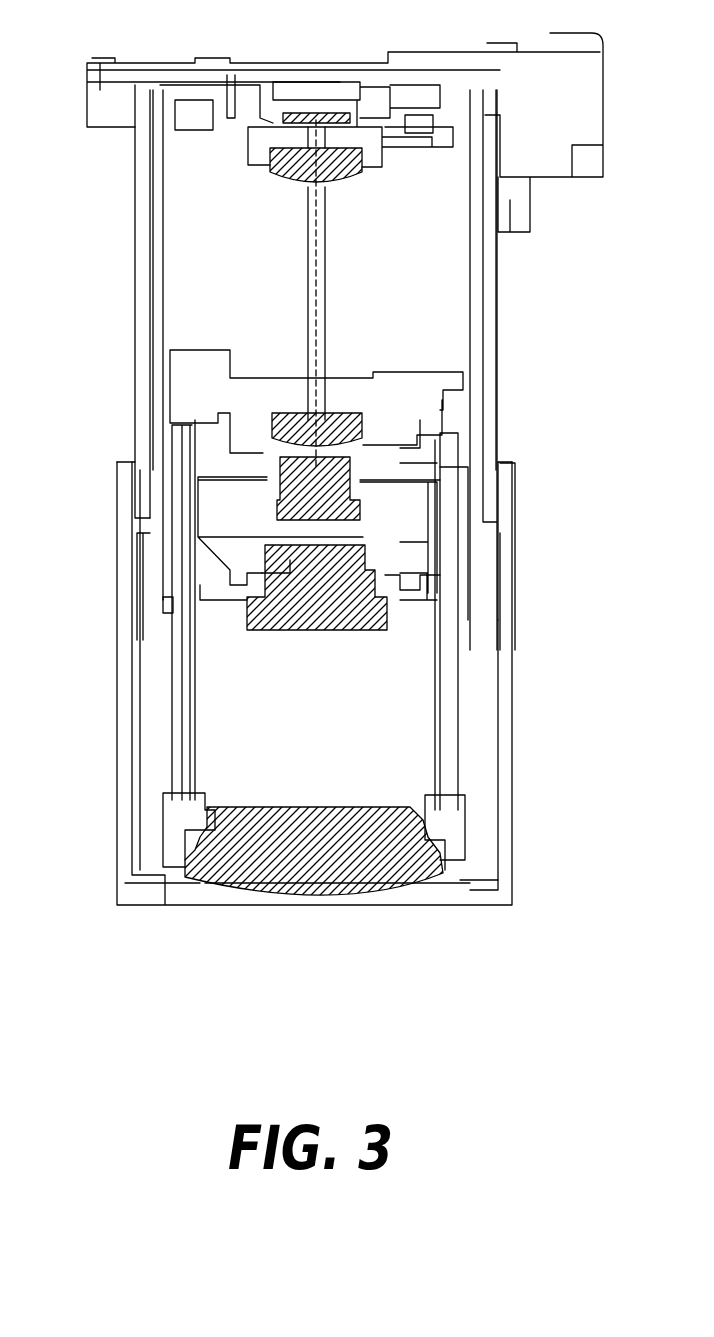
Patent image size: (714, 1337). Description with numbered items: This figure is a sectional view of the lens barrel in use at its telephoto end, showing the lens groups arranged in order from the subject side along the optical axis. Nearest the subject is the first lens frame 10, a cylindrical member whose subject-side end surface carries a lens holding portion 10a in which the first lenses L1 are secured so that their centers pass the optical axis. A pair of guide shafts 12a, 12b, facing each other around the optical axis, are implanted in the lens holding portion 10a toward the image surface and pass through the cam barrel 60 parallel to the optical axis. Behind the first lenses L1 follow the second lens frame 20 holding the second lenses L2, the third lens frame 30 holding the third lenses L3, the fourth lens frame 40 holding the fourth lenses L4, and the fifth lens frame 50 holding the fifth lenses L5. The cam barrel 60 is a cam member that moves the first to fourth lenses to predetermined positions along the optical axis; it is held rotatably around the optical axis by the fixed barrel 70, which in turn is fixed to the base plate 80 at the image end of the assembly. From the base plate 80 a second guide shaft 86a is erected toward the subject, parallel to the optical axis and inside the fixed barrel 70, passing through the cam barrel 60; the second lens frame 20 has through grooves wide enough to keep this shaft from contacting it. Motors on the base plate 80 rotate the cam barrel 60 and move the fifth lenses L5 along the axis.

The first lens frame 10 is at (122, 663).
The lens holding portion 10a is at (457, 838).
The guide shaft 12a is at (450, 738).
The guide shaft 12b is at (182, 738).
The second lens frame 20 is at (210, 582).
The third lens frame 30 is at (223, 470).
The fourth lens frame 40 is at (195, 386).
The fifth lens frame 50 is at (260, 144).
The cam barrel 60 is at (147, 296).
The fixed barrel 70 is at (155, 232).
The base plate 80 is at (177, 65).
The second guide shaft 86a is at (316, 293).
The first lenses L1 is at (440, 868).
The second lenses L2 is at (345, 620).
The third lenses L3 is at (342, 504).
The fourth lenses L4 is at (285, 442).
The fifth lenses L5 is at (356, 176).